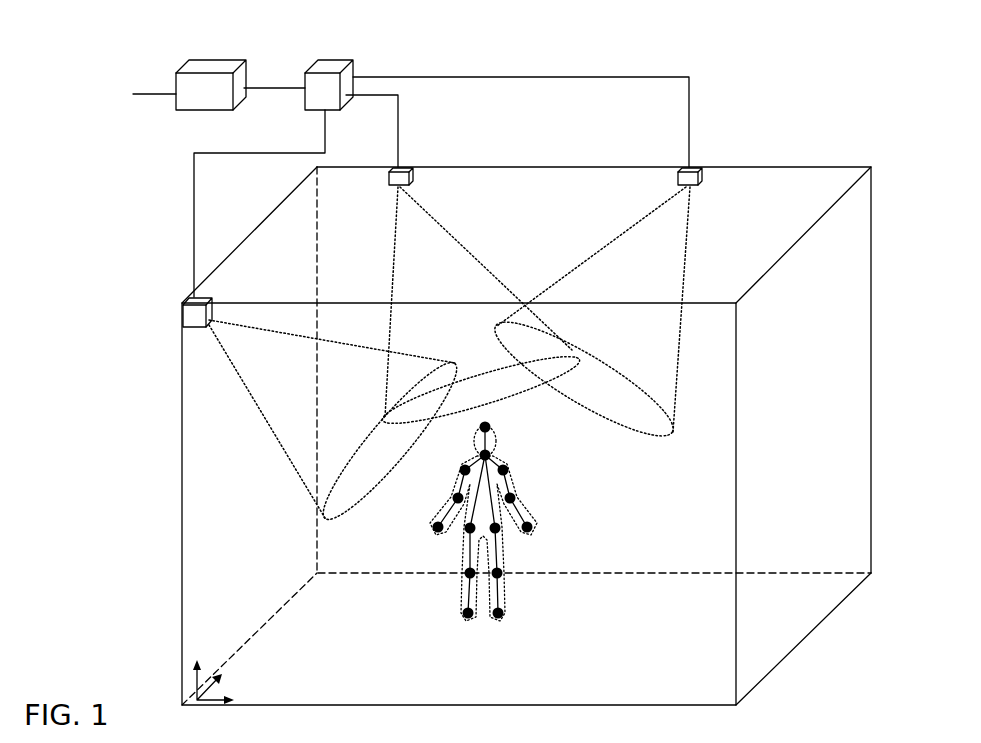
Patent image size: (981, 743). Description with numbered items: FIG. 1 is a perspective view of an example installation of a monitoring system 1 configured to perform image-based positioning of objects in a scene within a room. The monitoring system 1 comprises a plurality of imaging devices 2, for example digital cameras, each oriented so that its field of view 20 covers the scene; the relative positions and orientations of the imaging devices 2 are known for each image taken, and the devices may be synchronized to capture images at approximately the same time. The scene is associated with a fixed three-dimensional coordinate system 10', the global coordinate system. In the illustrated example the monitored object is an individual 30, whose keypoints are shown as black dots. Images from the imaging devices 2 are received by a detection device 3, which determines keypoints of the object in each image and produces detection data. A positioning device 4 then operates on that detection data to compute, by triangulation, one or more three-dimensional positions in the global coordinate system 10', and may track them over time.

The monitoring system 1 is at (727, 40).
The imaging device 2 is at (403, 167).
The detection device 3 is at (330, 63).
The positioning device 4 is at (208, 63).
The field of view 20 is at (465, 248).
The individual 30 is at (497, 458).
The fixed 3D coordinate system 10' is at (174, 672).